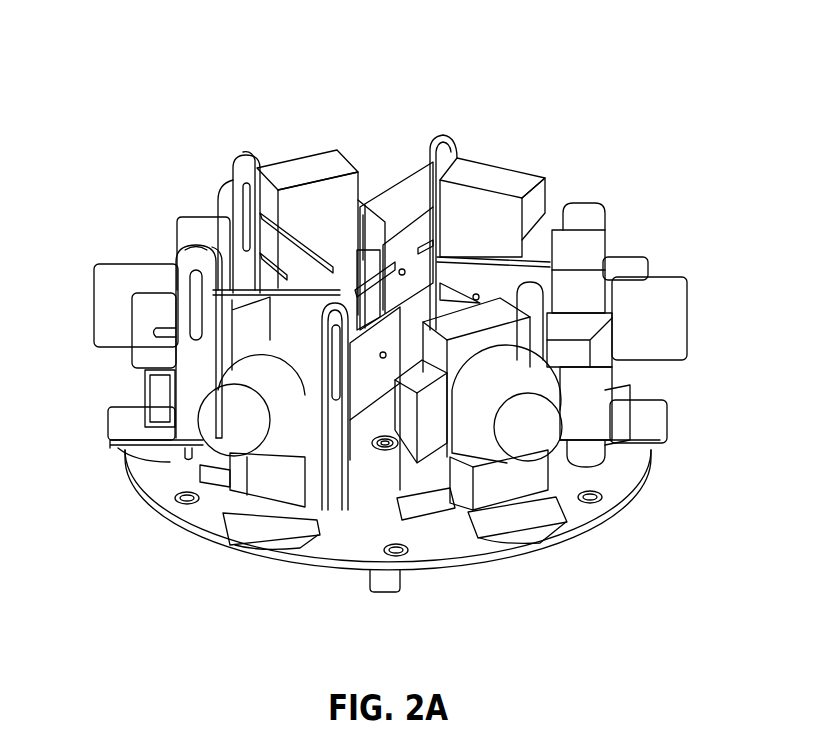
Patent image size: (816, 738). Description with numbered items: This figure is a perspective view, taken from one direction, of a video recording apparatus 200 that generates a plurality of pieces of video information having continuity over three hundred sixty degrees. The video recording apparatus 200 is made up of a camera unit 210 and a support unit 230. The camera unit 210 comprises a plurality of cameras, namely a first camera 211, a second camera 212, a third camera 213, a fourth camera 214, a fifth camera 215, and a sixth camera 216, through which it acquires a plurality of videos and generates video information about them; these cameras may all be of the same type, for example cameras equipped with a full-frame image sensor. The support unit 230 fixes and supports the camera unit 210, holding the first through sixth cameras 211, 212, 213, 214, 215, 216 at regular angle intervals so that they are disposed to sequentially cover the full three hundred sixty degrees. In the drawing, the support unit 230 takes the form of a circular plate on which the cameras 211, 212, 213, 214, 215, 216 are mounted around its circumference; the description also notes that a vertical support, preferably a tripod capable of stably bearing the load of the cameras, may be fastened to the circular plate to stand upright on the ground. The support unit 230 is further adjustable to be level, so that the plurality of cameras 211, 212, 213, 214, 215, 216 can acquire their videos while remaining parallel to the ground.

The video recording apparatus 200 is at (418, 51).
The camera unit 210 is at (200, 166).
The first camera 211 is at (302, 165).
The second camera 212 is at (488, 172).
The third camera 213 is at (658, 287).
The fourth camera 214 is at (532, 445).
The fifth camera 215 is at (225, 440).
The sixth camera 216 is at (134, 272).
The support unit 230 is at (333, 545).